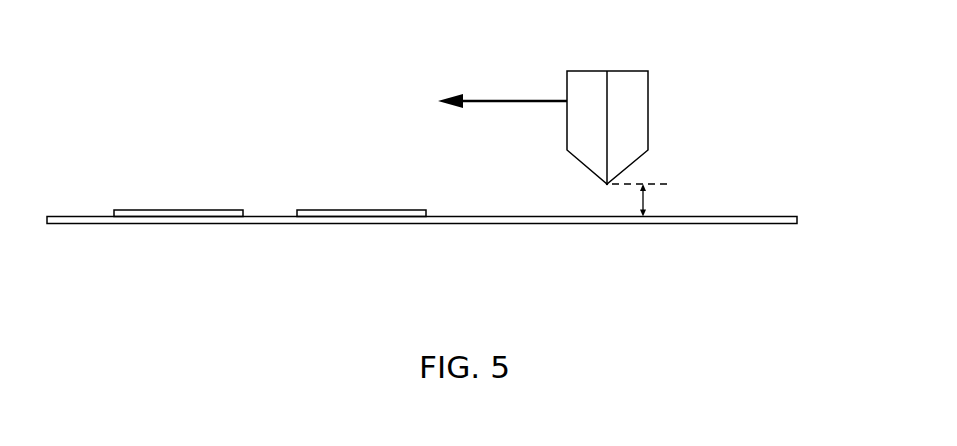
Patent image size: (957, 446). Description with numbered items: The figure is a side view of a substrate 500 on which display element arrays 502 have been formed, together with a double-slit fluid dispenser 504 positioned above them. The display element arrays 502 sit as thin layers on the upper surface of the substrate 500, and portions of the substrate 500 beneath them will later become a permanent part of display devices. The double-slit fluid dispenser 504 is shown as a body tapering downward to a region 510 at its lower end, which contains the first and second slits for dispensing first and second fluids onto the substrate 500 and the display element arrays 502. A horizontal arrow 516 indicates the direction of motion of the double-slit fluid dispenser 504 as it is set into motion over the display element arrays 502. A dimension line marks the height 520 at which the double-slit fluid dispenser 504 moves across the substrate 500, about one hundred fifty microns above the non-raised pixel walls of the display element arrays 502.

The substrate 500 is at (721, 224).
The display element arrays 502 is at (193, 209).
The double-slit fluid dispenser 504 is at (648, 102).
The region 510 is at (596, 192).
The direction of print head movement 516 is at (490, 101).
The height 520 is at (656, 201).